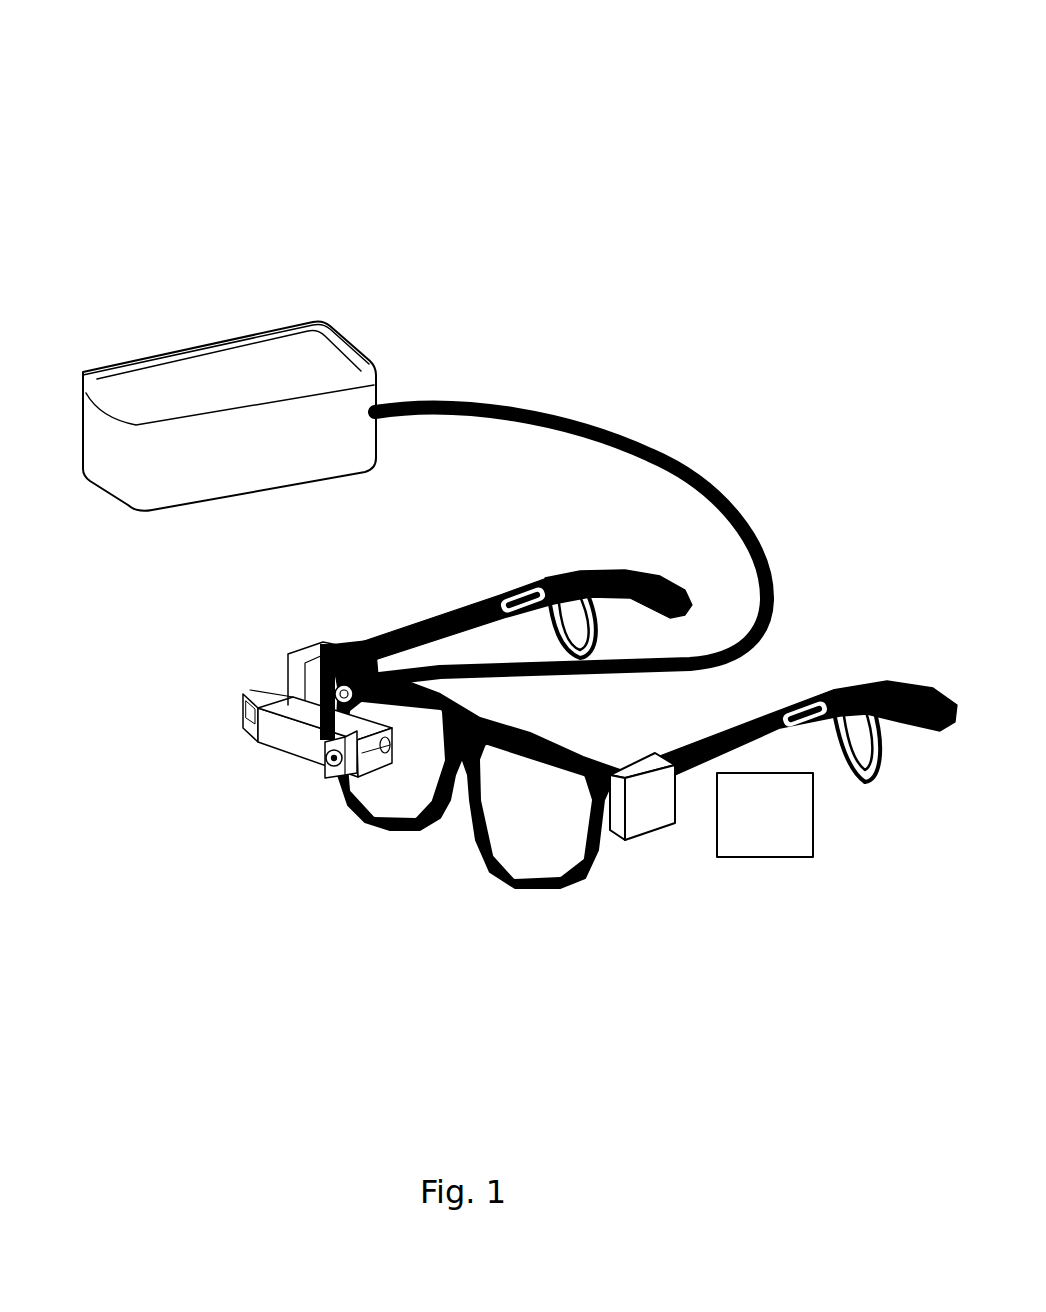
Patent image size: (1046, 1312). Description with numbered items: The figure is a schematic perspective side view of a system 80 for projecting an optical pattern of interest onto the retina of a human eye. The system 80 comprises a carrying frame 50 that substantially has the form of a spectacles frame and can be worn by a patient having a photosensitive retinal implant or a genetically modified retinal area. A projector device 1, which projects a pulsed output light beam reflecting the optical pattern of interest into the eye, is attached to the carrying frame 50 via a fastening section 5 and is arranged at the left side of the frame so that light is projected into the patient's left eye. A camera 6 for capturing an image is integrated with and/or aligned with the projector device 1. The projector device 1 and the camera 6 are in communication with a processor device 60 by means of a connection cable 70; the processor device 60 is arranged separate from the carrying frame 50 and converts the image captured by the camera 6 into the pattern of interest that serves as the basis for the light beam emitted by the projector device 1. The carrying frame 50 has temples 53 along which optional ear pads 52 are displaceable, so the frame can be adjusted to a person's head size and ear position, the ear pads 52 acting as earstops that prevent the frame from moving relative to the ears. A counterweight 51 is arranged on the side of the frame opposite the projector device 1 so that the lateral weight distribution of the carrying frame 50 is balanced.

The system 80 is at (147, 138).
The processor device 60 is at (257, 388).
The connection cable 70 is at (657, 453).
The carrying frame 50 is at (501, 585).
The temples 53 is at (374, 637).
The ear pads 52 is at (517, 588).
The counterweight 51 is at (657, 817).
The projector device 1 is at (262, 704).
The fastening section 5 is at (290, 700).
The camera 6 is at (320, 768).